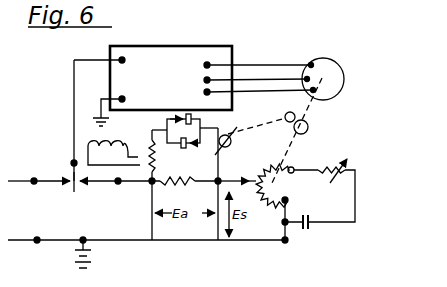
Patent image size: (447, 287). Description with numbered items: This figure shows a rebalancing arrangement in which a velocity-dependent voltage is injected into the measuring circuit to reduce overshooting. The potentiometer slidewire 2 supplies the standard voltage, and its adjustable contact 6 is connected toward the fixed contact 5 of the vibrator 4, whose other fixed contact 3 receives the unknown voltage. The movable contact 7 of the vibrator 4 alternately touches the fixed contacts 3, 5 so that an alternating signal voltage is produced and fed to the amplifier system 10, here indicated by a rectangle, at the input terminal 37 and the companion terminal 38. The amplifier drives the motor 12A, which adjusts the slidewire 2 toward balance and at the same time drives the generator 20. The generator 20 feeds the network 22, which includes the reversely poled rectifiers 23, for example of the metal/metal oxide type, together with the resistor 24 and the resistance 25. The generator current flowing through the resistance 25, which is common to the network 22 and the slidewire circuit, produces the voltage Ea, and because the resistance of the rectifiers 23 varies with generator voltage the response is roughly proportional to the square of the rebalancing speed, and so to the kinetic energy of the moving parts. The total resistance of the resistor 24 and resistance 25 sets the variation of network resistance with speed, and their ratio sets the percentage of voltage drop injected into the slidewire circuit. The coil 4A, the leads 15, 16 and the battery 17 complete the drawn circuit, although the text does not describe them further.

The amplifier system 10 is at (177, 46).
The input terminal 37 is at (125, 61).
The terminal 38 is at (125, 99).
The motor 12A is at (323, 70).
The generator 20 is at (250, 134).
The reversely poled rectifiers 23 is at (201, 121).
The resistor 24 is at (151, 137).
The relay coil 4A is at (88, 150).
The lead 15 is at (18, 174).
The vibrator 4 is at (39, 174).
The fixed contact 3 is at (46, 186).
The movable contact 7 is at (76, 188).
The fixed contact 5 is at (100, 186).
The resistance 25 is at (176, 185).
The network 22 is at (216, 180).
The adjustable contact 6 is at (236, 178).
The potentiometer slidewire 2 is at (270, 168).
The lead 16 is at (24, 242).
The battery 17 is at (86, 252).